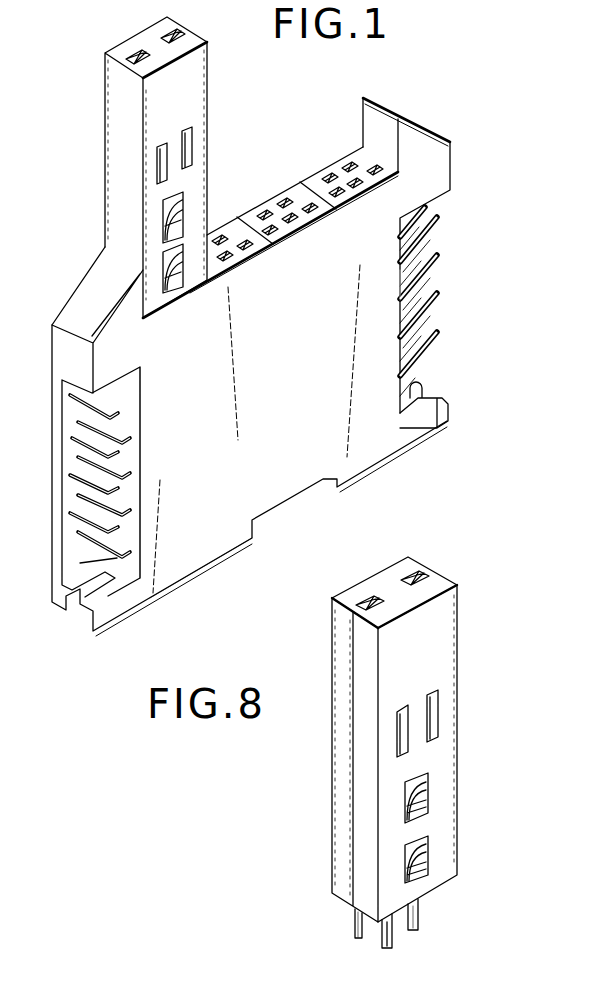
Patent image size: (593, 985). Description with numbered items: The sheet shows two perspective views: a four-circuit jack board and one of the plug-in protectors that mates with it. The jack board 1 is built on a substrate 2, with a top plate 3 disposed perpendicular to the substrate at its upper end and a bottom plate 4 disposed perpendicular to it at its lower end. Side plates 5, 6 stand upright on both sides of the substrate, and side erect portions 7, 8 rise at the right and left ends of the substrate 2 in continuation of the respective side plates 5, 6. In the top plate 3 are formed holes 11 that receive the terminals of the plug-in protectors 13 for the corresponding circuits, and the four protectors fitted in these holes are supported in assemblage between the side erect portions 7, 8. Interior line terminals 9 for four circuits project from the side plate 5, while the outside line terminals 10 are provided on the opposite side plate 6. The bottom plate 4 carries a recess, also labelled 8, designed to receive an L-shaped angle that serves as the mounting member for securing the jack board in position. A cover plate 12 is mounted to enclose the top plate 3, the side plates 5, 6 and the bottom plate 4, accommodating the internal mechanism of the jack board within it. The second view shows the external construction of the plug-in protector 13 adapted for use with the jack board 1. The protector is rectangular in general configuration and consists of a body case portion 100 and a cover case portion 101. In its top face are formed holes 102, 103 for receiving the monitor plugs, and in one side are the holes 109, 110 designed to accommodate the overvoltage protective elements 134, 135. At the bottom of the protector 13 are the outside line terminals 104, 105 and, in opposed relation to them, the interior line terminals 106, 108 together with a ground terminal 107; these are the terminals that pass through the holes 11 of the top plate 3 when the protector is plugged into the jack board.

In FIG. 1, the jack board 1 is at (452, 241).
In FIG. 1, the substrate 2 is at (62, 417).
In FIG. 1, the top plate 3 is at (321, 175).
In FIG. 1, the bottom plate 4 is at (210, 553).
In FIG. 1, the side plate 5 is at (400, 277).
In FIG. 1, the side plate 6 is at (138, 400).
In FIG. 1, the side erect portion 7 is at (420, 124).
In FIG. 1, the side erect portion 8 is at (78, 306).
In FIG. 1, the interior line terminals 9 is at (430, 316).
In FIG. 1, the outside line terminals 10 is at (80, 458).
In FIG. 1, the holes 11 is at (346, 165).
In FIG. 1, the cover plate 12 is at (287, 415).
In FIG. 1, the plug-in protector 13 is at (100, 121).
In FIG. 8, the plug-in protector 13 is at (412, 755).
In FIG. 8, the body case portion 100 is at (340, 731).
In FIG. 8, the cover case portion 101 is at (457, 681).
In FIG. 8, the hole 102 is at (362, 600).
In FIG. 8, the hole 103 is at (407, 573).
In FIG. 8, the outside line terminal 104 is at (385, 948).
In FIG. 8, the outside line terminal 105 is at (418, 923).
In FIG. 8, the interior line terminal 106 is at (360, 938).
In FIG. 8, the ground terminal 107 is at (357, 923).
In FIG. 8, the interior line terminal 108 is at (414, 907).
In FIG. 8, the hole 109 is at (428, 781).
In FIG. 8, the hole 110 is at (428, 842).
In FIG. 8, the overvoltage protective element 134 is at (428, 864).
In FIG. 8, the overvoltage protective element 135 is at (428, 805).